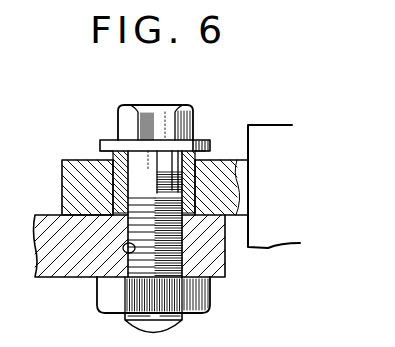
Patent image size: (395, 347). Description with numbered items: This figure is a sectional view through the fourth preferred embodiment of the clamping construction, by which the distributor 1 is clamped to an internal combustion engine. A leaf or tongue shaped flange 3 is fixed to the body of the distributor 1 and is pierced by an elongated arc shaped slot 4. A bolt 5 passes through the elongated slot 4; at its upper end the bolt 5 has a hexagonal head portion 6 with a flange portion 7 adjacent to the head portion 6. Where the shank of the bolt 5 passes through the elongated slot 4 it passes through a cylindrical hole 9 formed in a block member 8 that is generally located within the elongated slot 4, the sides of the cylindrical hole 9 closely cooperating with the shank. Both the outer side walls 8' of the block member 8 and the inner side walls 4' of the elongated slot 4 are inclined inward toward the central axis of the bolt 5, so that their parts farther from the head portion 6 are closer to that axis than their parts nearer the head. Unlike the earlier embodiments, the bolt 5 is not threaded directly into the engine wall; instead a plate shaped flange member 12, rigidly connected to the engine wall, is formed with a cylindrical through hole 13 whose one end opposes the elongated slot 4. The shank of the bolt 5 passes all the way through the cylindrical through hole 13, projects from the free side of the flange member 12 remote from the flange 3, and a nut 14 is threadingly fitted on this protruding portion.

The distributor 1 is at (272, 136).
The flange 3 is at (62, 189).
The elongated arc shaped slot 4 is at (130, 245).
The inner side walls of the elongated slot 4' is at (157, 182).
The bolt 5 is at (204, 150).
The head portion 6 is at (142, 106).
The flange portion 7 is at (191, 162).
The block member 8 is at (141, 132).
The outer side walls of the block member 8' is at (152, 144).
The cylindrical hole 9 is at (133, 163).
The plate shaped flange member 12 is at (216, 268).
The cylindrical through hole 13 is at (124, 253).
The nut 14 is at (200, 299).